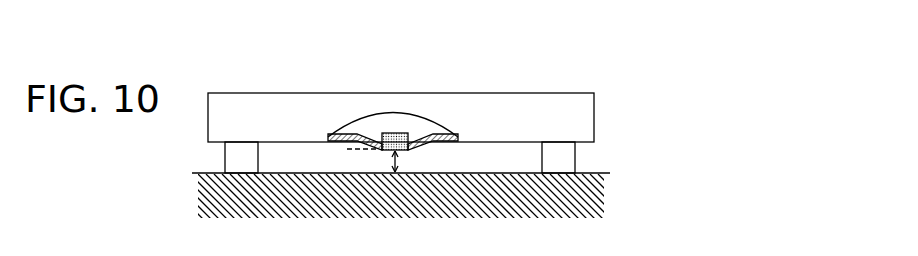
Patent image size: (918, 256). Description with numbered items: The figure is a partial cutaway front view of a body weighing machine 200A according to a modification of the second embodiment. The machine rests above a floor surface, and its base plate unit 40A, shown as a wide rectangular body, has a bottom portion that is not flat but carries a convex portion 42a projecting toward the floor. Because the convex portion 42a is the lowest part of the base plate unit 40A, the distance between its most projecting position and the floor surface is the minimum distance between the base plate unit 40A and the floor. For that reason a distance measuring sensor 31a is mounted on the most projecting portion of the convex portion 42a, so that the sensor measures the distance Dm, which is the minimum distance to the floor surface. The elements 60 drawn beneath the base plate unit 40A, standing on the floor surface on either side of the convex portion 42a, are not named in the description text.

The base plate unit 40A is at (585, 93).
The convex portion 42a is at (336, 135).
The distance measuring sensor 31a is at (390, 133).
The support leg 60 is at (237, 150).
The distance Dm is at (403, 153).
The body weighing machine 200A is at (803, 50).